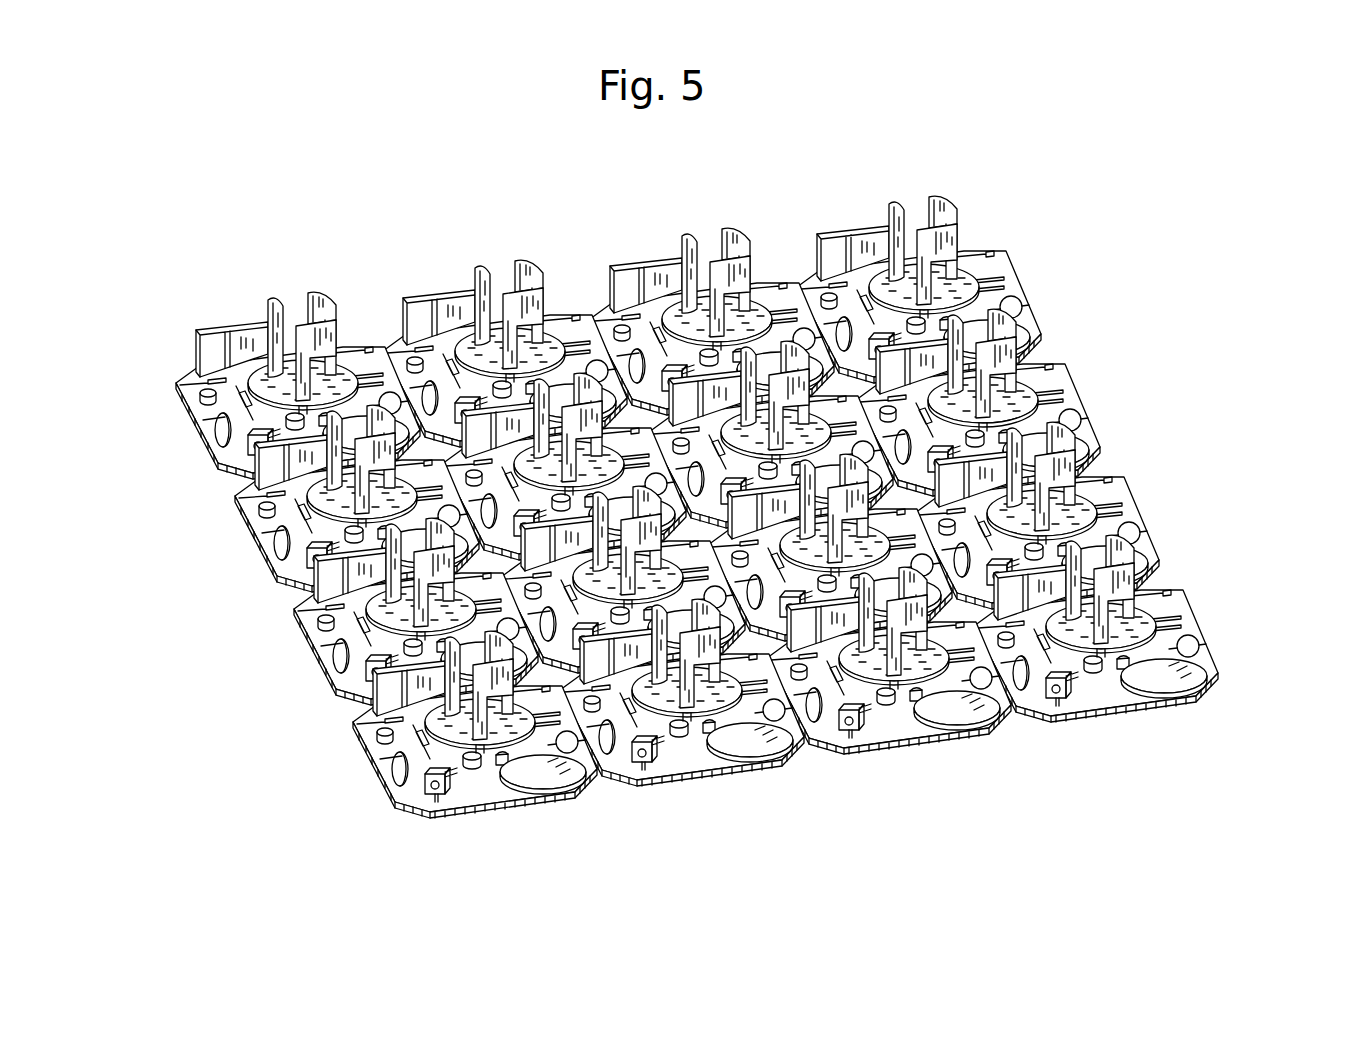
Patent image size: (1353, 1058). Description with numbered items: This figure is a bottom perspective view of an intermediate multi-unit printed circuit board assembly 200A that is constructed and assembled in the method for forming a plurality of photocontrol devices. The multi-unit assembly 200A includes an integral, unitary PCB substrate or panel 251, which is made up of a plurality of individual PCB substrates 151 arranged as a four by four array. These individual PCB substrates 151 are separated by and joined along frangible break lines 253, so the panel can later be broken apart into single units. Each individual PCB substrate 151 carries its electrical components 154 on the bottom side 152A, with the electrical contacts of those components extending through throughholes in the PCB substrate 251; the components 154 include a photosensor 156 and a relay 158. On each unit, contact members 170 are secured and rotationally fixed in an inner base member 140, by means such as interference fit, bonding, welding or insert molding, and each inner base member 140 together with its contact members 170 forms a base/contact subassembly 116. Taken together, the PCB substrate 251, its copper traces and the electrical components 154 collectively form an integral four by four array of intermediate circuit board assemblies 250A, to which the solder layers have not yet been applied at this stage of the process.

The base/contact subassembly 116 is at (408, 519).
The inner base member 140 is at (442, 745).
The individual PCB substrate 151 is at (583, 648).
The bottom side 152A is at (475, 793).
The electrical components 154 is at (1058, 377).
The photosensor 156 is at (437, 800).
The relay 158 is at (372, 712).
The contact members 170 is at (275, 307).
The intermediate multi-unit printed circuit board assembly 200A is at (709, 490).
The intermediate circuit board assemblies 250A is at (463, 238).
The PCB substrate 251 is at (495, 812).
The frangible break lines 253 is at (640, 750).